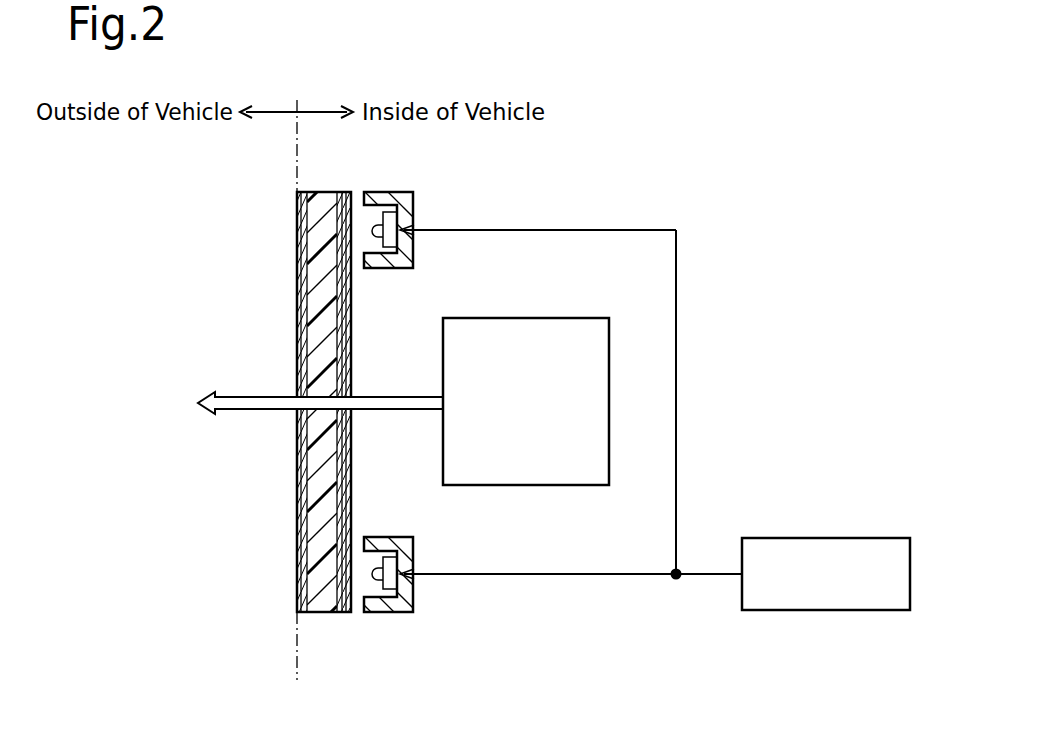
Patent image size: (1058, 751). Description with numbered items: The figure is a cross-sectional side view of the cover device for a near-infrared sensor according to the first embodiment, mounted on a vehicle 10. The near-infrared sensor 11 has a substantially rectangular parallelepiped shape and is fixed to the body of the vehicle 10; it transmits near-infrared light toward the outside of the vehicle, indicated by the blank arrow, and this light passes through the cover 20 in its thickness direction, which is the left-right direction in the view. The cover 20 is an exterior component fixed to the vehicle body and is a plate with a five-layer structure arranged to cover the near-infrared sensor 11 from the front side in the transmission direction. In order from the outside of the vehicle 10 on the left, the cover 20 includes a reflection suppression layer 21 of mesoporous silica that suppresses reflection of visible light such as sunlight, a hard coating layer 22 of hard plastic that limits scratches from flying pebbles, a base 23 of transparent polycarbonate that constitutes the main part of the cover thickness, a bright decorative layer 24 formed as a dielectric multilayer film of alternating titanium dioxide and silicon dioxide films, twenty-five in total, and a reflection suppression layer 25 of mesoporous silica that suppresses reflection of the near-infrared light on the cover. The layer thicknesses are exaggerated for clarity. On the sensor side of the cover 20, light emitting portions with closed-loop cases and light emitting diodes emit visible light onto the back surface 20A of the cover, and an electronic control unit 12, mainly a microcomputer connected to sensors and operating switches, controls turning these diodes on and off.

The vehicle 10 is at (296, 140).
The near-infrared sensor 11 is at (528, 318).
The electronic control unit 12 is at (826, 538).
The cover 20 is at (325, 404).
The back surface 20A is at (354, 325).
The reflection suppression layer 21 is at (297, 470).
The hard coating layer 22 is at (300, 520).
The base 23 is at (324, 606).
The bright decorative layer 24 is at (351, 441).
The reflection suppression layer 25 is at (352, 500).